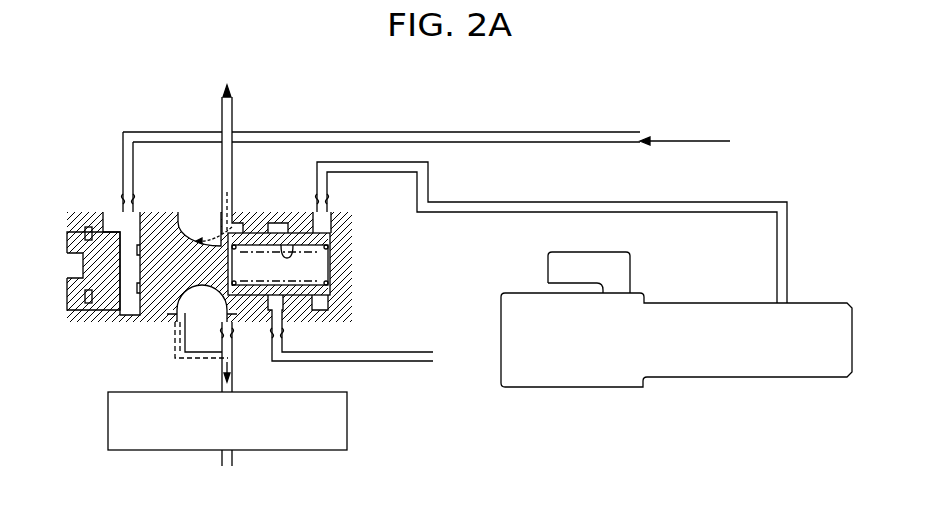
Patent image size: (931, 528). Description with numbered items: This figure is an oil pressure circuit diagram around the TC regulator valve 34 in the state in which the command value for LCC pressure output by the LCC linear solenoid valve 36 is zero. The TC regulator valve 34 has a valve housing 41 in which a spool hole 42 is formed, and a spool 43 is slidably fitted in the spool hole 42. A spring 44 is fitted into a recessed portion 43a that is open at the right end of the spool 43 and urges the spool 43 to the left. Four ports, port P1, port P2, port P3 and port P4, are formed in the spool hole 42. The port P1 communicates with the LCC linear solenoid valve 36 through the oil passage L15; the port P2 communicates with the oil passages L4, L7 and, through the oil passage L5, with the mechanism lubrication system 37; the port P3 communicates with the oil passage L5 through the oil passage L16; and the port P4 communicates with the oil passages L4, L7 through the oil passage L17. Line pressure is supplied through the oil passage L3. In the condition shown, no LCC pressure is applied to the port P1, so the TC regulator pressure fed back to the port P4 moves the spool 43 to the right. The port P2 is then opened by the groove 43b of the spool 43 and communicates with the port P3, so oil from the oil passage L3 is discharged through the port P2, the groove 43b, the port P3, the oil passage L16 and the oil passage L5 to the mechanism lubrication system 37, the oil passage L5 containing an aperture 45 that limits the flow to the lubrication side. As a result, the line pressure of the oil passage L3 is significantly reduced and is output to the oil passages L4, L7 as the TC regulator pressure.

The TC regulator valve 34 is at (100, 203).
The LCC linear solenoid valve 36 is at (819, 295).
The mechanism lubrication system 37 is at (349, 412).
The valve housing 41 is at (95, 326).
The spool hole 42 is at (158, 212).
The spool 43 is at (260, 222).
The recessed portion 43a is at (295, 245).
The groove 43b is at (197, 212).
The spring 44 is at (332, 291).
The aperture 45 is at (233, 334).
The port P1 is at (325, 228).
The port P2 is at (246, 212).
The port P3 is at (187, 313).
The port P4 is at (110, 222).
The oil passage L3 is at (403, 132).
The oil passage L4 is at (227, 136).
The oil passage L7 is at (234, 118).
The oil passage L5 is at (222, 374).
The oil passage L15 is at (466, 207).
The oil passage L16 is at (176, 345).
The oil passage L17 is at (168, 140).